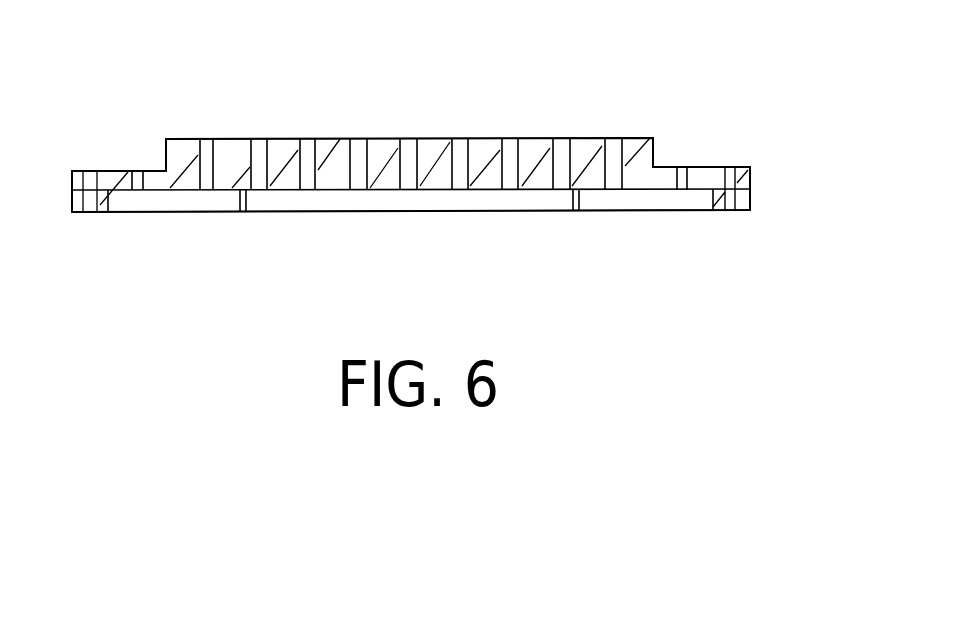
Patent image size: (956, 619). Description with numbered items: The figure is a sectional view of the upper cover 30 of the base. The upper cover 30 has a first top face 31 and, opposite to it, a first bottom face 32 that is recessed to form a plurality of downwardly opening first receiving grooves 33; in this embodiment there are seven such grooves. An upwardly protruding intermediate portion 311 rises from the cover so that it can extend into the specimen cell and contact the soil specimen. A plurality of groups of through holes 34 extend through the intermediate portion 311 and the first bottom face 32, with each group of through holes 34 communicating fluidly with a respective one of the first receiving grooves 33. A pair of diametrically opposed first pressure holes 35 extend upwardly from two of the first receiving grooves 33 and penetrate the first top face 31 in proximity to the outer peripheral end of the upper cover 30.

The upper cover 30 is at (473, 105).
The first top face 31 is at (715, 166).
The intermediate portion 311 is at (636, 138).
The first bottom face 32 is at (718, 212).
The first receiving grooves 33 is at (173, 200).
The through holes 34 is at (252, 148).
The first pressure holes 35 is at (138, 170).